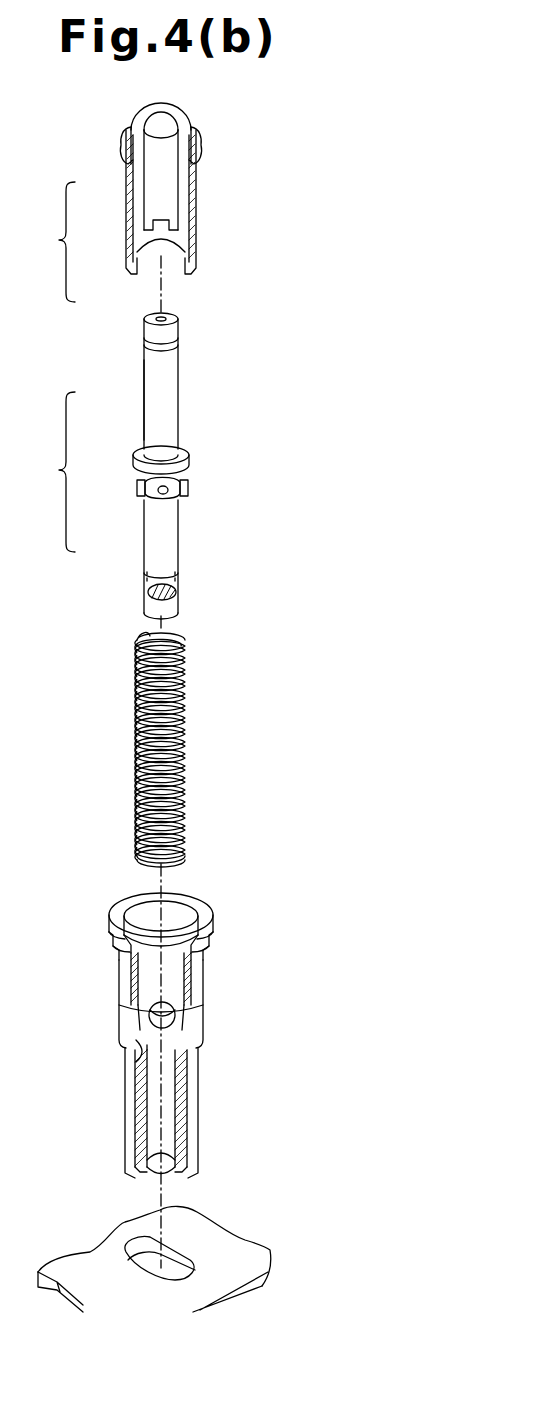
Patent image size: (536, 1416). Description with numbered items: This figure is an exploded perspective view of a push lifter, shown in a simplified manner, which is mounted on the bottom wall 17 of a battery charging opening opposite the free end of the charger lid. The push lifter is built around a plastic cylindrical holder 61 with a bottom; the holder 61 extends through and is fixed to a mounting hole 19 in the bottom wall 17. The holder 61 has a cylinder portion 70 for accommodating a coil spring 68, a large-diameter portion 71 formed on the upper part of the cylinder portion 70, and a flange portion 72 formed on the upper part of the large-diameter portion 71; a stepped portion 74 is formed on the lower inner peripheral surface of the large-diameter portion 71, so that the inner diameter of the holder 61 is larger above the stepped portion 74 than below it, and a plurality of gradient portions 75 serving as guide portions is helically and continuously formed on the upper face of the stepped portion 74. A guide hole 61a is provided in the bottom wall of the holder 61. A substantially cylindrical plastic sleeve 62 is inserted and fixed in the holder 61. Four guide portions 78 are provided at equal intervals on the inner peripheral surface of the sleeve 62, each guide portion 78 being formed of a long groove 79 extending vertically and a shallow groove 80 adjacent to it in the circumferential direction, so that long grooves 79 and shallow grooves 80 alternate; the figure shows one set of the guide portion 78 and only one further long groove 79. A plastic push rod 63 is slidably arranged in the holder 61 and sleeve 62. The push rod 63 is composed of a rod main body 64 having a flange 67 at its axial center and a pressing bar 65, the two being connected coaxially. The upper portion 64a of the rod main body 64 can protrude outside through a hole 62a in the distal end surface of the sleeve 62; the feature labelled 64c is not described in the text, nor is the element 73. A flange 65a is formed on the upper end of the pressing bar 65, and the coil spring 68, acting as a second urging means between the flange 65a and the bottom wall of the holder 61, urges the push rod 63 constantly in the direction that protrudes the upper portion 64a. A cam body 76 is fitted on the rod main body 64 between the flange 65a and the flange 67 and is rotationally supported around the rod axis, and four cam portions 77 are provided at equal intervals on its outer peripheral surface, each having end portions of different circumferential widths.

The bottom wall 17 is at (178, 1259).
The mounting hole 19 is at (184, 1252).
The cylindrical holder 61 is at (167, 1045).
The guide hole 61a is at (165, 1175).
The sleeve 62 is at (145, 201).
The hole 62a is at (170, 116).
The push rod 63 is at (139, 466).
The rod main body 64 is at (161, 381).
The upper portion 64a is at (172, 388).
The shaft top groove 64c is at (178, 343).
The pressing bar 65 is at (143, 535).
The flange 65a is at (162, 505).
The flange 67 is at (192, 459).
The coil spring 68 is at (186, 752).
The cylinder portion 70 is at (200, 1098).
The large-diameter portion 71 is at (118, 976).
The flange portion 72 is at (208, 901).
The flange step 73 is at (213, 946).
The stepped portion 74 is at (141, 1057).
The gradient portions 75 is at (185, 1010).
The cam body 76 is at (164, 496).
The cam portions 77 is at (190, 489).
The guide portions 78 is at (52, 242).
The long groove 79 is at (146, 192).
The shallow groove 80 is at (161, 232).